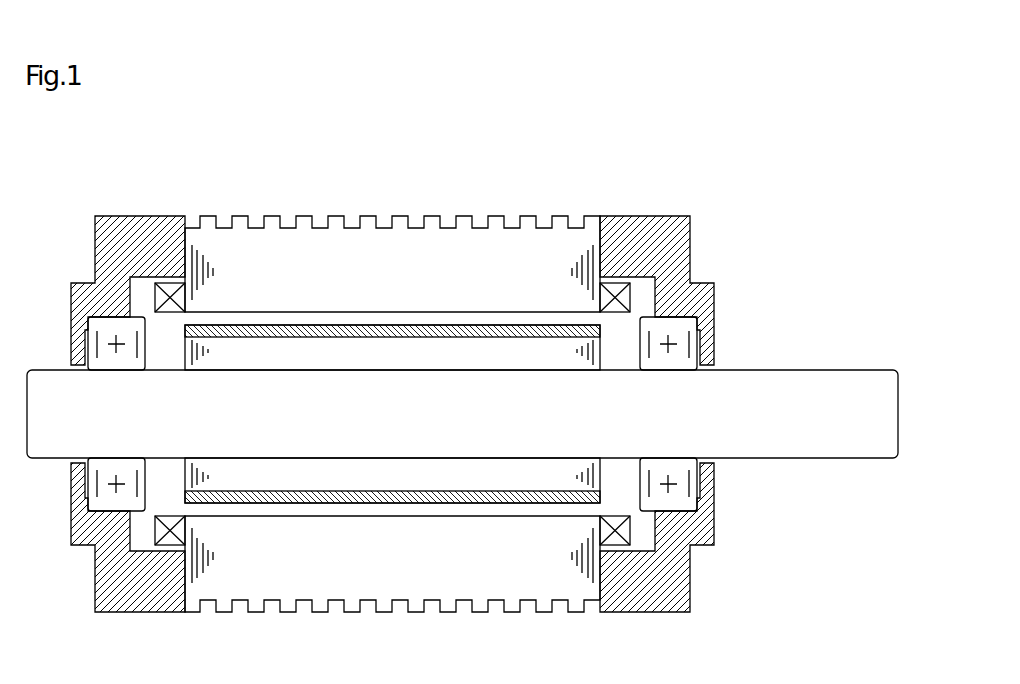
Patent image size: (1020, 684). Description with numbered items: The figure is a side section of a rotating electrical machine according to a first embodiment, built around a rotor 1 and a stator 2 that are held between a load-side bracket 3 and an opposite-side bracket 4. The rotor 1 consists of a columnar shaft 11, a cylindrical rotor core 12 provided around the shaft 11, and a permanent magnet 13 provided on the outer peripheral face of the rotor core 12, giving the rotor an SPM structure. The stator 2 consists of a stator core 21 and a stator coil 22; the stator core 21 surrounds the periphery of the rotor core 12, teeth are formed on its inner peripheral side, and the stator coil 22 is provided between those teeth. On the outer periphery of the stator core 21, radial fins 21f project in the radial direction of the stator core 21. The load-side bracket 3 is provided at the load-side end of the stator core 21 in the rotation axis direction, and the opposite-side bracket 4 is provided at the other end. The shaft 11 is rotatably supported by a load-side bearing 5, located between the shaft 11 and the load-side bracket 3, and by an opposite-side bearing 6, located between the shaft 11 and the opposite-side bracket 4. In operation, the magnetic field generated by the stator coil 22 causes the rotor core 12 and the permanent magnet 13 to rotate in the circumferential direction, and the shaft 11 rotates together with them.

The rotor 1 is at (462, 404).
The stator 2 is at (392, 380).
The load-side bracket 3 is at (650, 216).
The opposite-side bracket 4 is at (128, 216).
The load-side bearing 5 is at (682, 505).
The opposite-side bearing 6 is at (108, 500).
The shaft 11 is at (745, 375).
The rotor core 12 is at (392, 498).
The permanent magnet 13 is at (440, 503).
The stator core 21 is at (392, 380).
The radial fin 21f is at (430, 216).
The stator coil 22 is at (170, 290).